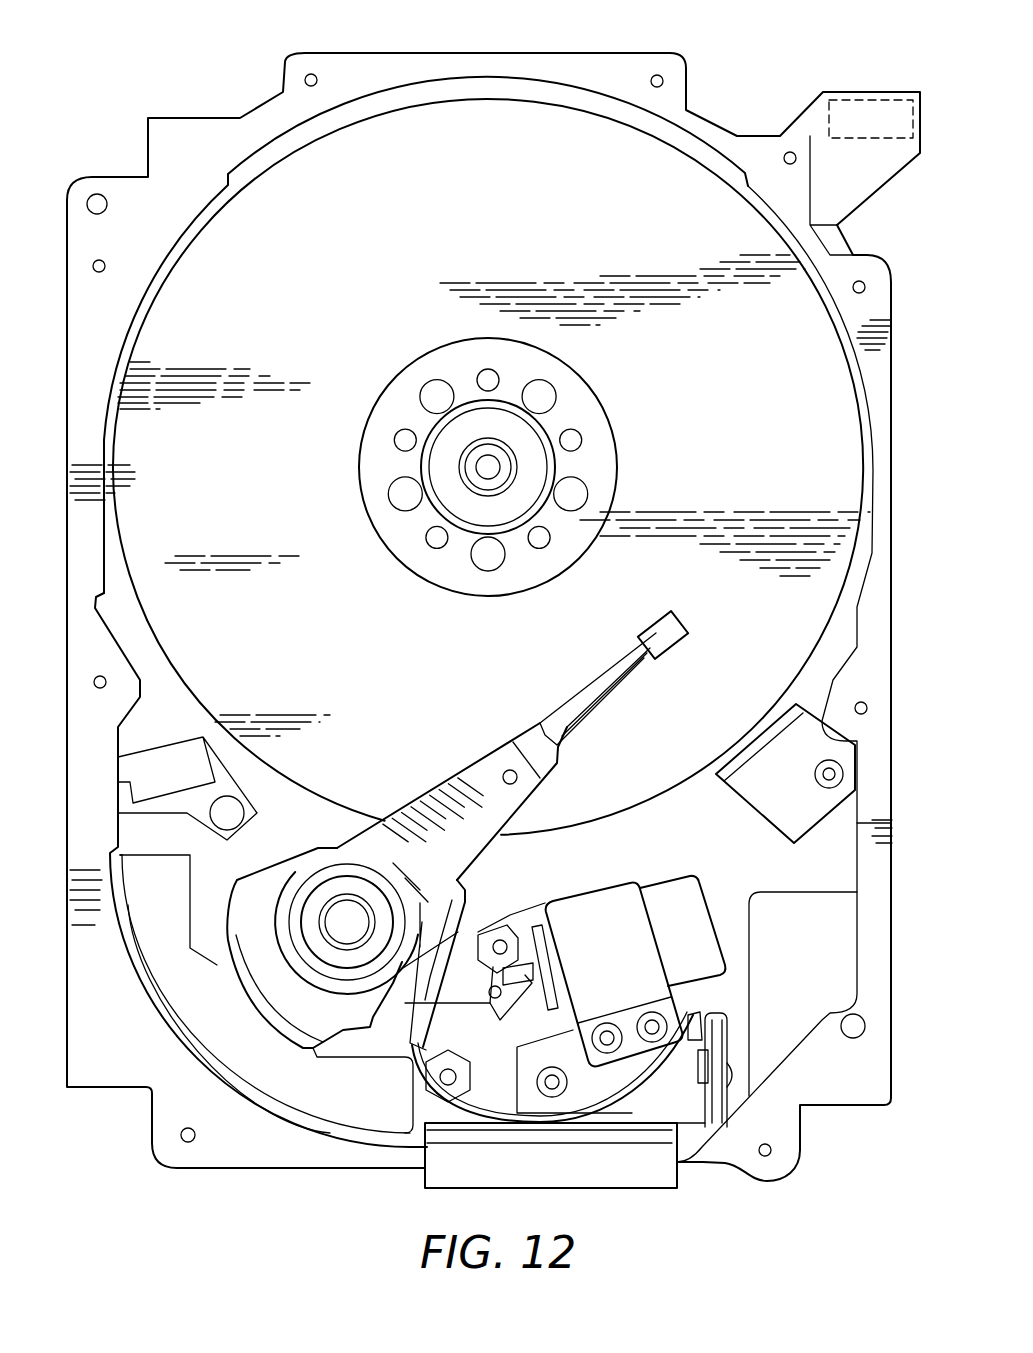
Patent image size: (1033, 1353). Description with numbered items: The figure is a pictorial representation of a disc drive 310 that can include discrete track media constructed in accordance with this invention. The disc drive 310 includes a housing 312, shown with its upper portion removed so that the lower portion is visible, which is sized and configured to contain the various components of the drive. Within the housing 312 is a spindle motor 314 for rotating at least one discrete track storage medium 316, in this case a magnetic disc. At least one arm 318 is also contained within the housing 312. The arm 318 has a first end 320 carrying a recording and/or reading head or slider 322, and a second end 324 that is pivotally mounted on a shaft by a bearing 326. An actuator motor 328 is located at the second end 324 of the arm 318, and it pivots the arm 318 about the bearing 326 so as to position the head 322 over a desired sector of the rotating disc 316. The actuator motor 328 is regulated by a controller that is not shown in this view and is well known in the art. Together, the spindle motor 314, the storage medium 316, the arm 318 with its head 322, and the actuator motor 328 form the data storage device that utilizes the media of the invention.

The disc drive 310 is at (125, 105).
The housing 312 is at (633, 67).
The spindle motor 314 is at (480, 472).
The discrete track storage medium 316 is at (398, 246).
The arm 318 is at (472, 793).
The first end 320 is at (603, 668).
The head or slider 322 is at (684, 630).
The second end 324 is at (377, 853).
The bearing 326 is at (337, 910).
The actuator motor 328 is at (235, 1049).